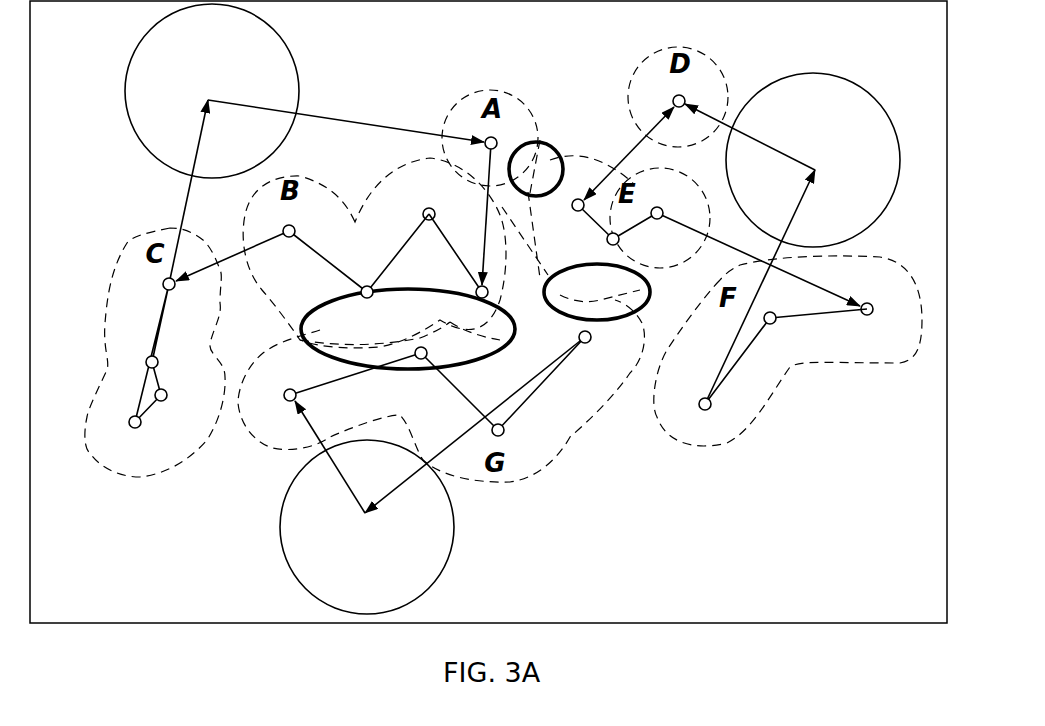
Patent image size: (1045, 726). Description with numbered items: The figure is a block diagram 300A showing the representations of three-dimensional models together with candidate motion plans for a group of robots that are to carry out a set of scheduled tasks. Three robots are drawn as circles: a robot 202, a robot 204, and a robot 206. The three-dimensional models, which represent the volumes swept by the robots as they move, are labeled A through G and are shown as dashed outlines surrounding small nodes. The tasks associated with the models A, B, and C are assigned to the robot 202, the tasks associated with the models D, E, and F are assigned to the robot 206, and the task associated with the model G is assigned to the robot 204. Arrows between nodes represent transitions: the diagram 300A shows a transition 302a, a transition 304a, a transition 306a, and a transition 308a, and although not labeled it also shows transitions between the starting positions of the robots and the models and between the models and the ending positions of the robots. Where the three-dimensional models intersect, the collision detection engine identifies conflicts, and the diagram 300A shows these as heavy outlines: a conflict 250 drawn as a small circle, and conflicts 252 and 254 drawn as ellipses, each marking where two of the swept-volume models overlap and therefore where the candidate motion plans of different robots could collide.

The robot 202 is at (212, 91).
The robot 204 is at (367, 527).
The robot 206 is at (813, 160).
The conflict 250 is at (528, 144).
The conflict 252 is at (623, 268).
The conflict 254 is at (381, 368).
The transition 302a is at (455, 214).
The transition 304a is at (242, 256).
The transition 306a is at (629, 153).
The transition 308a is at (772, 264).
The block diagram 300A is at (868, 680).